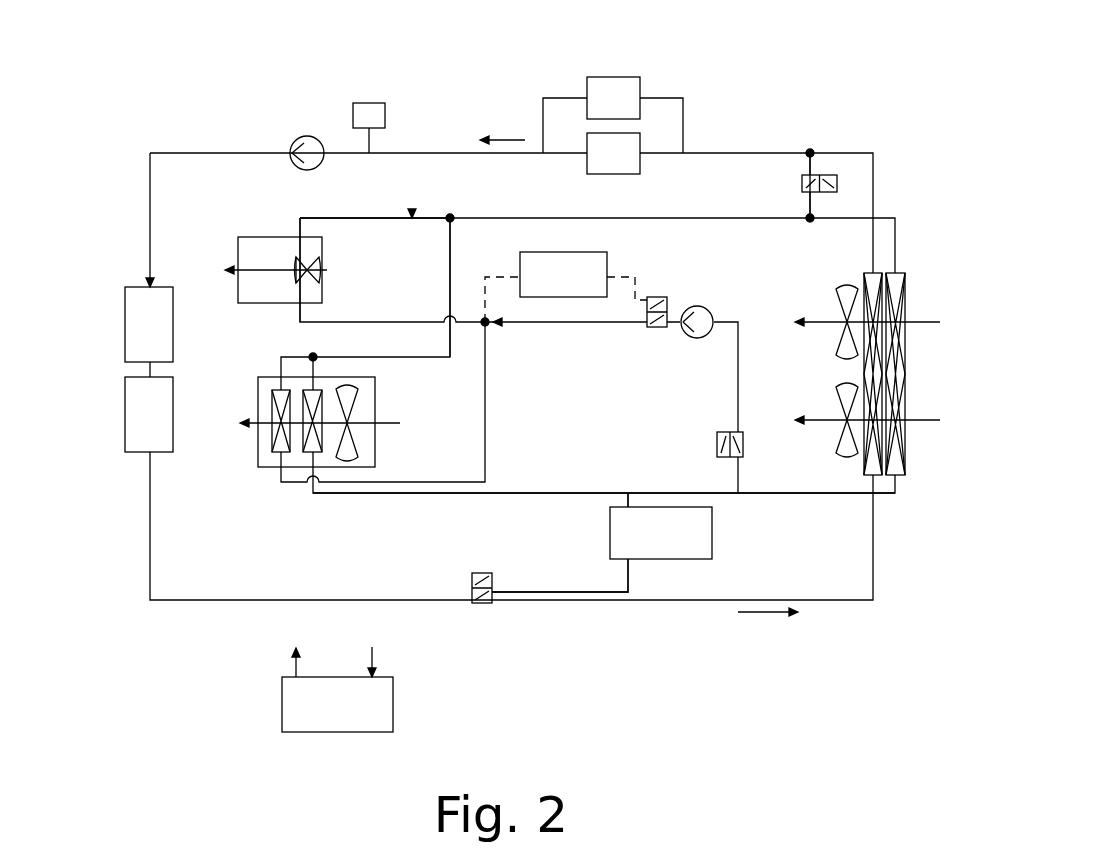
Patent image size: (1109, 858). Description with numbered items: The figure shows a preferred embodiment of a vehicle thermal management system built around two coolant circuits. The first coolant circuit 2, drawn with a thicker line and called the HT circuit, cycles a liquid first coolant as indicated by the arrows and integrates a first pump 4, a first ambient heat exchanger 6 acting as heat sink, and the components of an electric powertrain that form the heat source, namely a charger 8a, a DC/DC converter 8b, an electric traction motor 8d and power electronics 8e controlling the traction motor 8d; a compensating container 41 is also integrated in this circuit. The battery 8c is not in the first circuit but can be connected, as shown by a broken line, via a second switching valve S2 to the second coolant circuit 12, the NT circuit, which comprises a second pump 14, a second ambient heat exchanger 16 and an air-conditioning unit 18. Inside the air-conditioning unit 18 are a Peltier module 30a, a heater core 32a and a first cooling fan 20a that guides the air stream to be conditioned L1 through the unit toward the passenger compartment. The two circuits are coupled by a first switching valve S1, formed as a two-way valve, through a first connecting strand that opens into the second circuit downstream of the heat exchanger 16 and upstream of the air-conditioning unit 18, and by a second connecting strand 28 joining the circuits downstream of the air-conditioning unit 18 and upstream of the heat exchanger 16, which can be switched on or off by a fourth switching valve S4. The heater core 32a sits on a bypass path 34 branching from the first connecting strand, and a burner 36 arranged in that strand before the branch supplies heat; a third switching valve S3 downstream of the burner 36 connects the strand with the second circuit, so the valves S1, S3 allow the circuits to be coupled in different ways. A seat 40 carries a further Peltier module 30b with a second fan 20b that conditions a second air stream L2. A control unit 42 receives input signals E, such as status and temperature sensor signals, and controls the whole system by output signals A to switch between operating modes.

The first coolant circuit 2 is at (772, 148).
The first pump 4 is at (310, 136).
The first ambient heat exchanger 6 is at (865, 272).
The charger 8a is at (620, 87).
The DC/DC converter 8b is at (637, 147).
The battery 8c is at (595, 265).
The electric traction motor 8d is at (125, 405).
The power electronics 8e is at (135, 310).
The second coolant circuit 12 is at (414, 214).
The second pump 14 is at (697, 340).
The second ambient heat exchanger 16 is at (900, 270).
The air-conditioning unit 18 is at (254, 455).
The first cooling fan 20a is at (348, 445).
The second fan 20b is at (318, 272).
The second connecting strand 28 is at (813, 163).
The Peltier module 30a is at (275, 454).
The further Peltier module 30b is at (298, 280).
The heater core 32a is at (312, 454).
The bypass path 34 is at (387, 495).
The burner 36 is at (705, 535).
The seat 40 is at (270, 237).
The compensating container 41 is at (370, 110).
The control unit 42 is at (393, 710).
The first switching valve S1 is at (478, 573).
The second switching valve S2 is at (655, 330).
The third switching valve S3 is at (745, 448).
The fourth switching valve S4 is at (800, 183).
The air stream to be conditioned L1 is at (365, 415).
The second air stream L2 is at (248, 267).
The output signals A is at (296, 668).
The input signals E is at (372, 655).